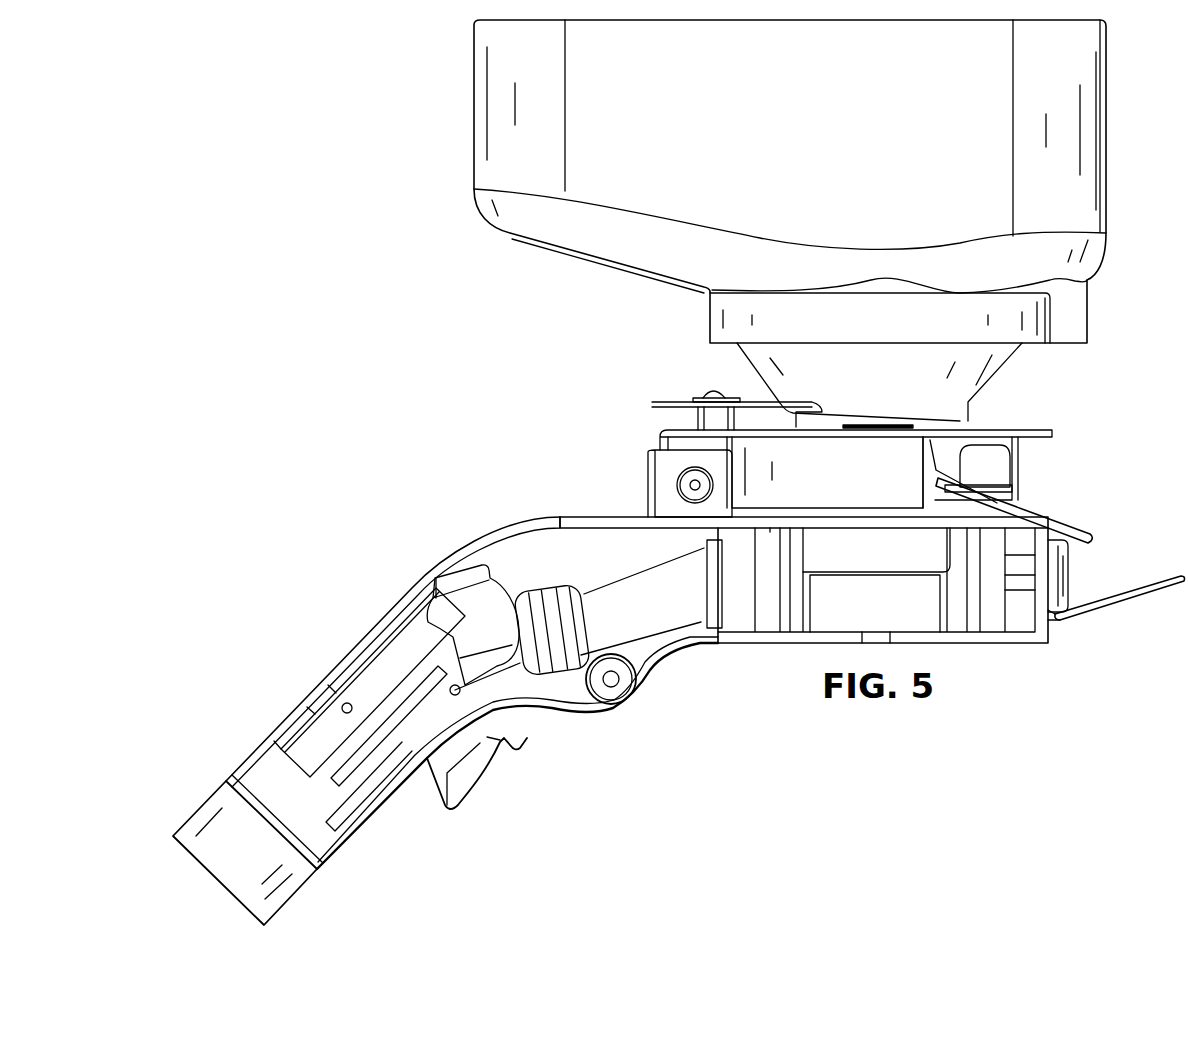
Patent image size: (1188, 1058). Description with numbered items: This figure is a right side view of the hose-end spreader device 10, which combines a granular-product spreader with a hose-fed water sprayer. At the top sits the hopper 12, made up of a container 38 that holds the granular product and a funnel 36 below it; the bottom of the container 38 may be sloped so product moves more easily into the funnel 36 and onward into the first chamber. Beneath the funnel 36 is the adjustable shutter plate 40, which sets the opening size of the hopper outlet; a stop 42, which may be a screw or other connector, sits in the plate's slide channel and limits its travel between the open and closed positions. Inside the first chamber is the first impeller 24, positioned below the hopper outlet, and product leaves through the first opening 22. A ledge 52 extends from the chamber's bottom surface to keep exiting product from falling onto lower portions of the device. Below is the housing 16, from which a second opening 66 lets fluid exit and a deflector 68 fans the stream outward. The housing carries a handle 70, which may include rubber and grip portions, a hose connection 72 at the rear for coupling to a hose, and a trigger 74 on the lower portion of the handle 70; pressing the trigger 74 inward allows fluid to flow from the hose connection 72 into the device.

The hose-end spreader device 10 is at (278, 88).
The hopper 12 is at (466, 110).
The container 38 is at (1107, 128).
The funnel 36 is at (996, 373).
The adjustable shutter plate 40 is at (652, 404).
The stop 42 is at (710, 395).
The first impeller 24 is at (1003, 467).
The first opening 22 is at (1030, 484).
The ledge 52 is at (1088, 533).
The housing 16 is at (632, 506).
The second opening 66 is at (1072, 580).
The deflector 68 is at (1143, 593).
The handle 70 is at (333, 676).
The hose connection 72 is at (203, 814).
The trigger 74 is at (486, 778).